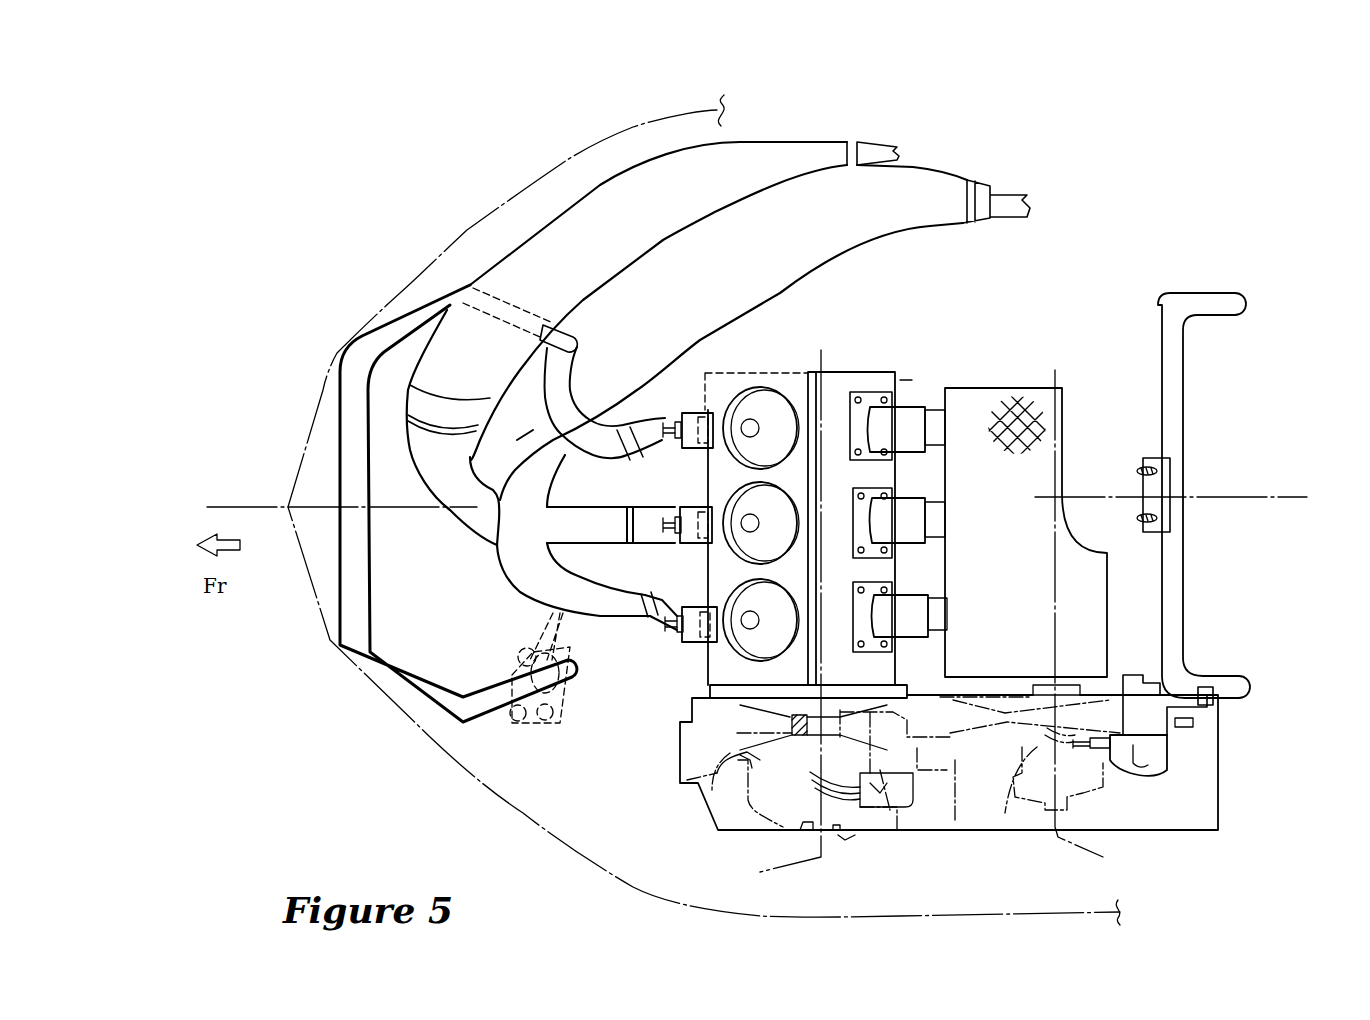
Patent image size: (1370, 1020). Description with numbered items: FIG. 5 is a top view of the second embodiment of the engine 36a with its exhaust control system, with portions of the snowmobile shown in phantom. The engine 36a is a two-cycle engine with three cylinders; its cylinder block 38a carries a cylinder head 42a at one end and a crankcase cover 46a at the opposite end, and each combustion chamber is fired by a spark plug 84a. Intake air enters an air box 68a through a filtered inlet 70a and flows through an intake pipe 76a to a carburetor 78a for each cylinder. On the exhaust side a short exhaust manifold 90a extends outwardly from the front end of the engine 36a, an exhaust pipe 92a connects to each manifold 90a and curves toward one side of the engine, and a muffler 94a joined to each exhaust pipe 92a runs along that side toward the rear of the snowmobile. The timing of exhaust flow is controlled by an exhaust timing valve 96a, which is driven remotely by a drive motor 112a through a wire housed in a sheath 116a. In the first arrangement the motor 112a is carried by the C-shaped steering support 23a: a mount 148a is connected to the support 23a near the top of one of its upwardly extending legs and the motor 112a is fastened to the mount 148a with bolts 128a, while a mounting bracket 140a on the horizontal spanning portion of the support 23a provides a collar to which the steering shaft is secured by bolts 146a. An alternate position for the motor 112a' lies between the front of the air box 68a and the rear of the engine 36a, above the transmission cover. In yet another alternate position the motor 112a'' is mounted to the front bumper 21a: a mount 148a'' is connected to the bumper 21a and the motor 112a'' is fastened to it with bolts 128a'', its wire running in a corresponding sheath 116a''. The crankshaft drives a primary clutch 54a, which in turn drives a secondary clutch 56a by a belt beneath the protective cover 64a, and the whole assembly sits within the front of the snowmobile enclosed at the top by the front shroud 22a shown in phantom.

The muffler 94a is at (763, 150).
The engine 36a is at (893, 366).
The cylinder block 38a is at (703, 407).
The spark plug 84a is at (747, 400).
The cylinder head 42a is at (800, 390).
The crankcase cover 46a is at (887, 383).
The carburetor 78a is at (910, 410).
The intake pipe 76a is at (938, 425).
The air box 68a is at (1065, 410).
The filtered inlet 70a is at (1027, 437).
The mounting bracket 140a is at (1163, 482).
The bolt 146a is at (1140, 522).
The steering support 23a is at (1178, 565).
The mount 148a is at (1221, 674).
The bolt 128a is at (1235, 705).
The drive motor 112a is at (1207, 766).
The drive motor 112a' is at (903, 826).
The drive motor 112a'' is at (504, 668).
The sheath 116a is at (936, 646).
The fuel injector (alternate position) 116a'' is at (599, 697).
The bolt 128a'' is at (600, 758).
The mount 148a'' is at (545, 724).
The exhaust pipe 92a is at (537, 600).
The exhaust manifold 90a is at (650, 622).
The exhaust timing valve 96a is at (695, 622).
The front bumper 21a is at (407, 673).
The front shroud 22a is at (520, 813).
The primary clutch 54a is at (695, 790).
The secondary clutch 56a is at (1005, 813).
The protective cover 64a is at (955, 820).